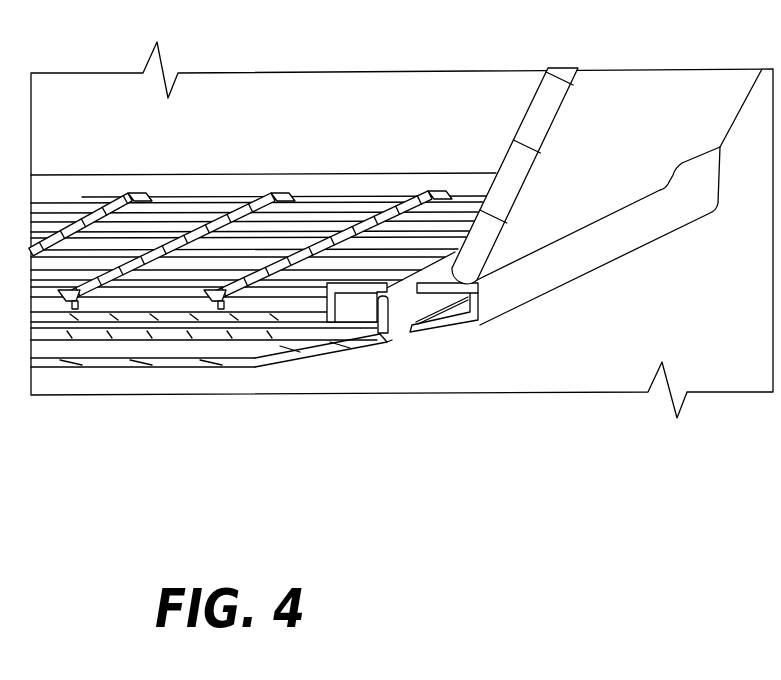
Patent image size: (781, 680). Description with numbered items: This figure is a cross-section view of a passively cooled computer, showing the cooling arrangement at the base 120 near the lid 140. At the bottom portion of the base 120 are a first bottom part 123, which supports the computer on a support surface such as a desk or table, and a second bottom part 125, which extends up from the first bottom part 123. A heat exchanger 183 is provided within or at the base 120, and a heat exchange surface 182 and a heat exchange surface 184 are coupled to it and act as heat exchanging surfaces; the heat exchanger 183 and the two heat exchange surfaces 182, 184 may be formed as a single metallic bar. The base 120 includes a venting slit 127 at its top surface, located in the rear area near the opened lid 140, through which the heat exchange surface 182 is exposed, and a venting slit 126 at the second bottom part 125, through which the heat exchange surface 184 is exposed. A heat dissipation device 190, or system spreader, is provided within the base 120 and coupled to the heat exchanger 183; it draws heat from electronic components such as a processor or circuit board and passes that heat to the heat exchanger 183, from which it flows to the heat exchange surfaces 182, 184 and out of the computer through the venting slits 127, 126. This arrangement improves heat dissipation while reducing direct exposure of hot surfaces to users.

The base 120 is at (88, 183).
The first bottom part 123 is at (67, 370).
The second bottom part 125 is at (310, 357).
The venting slit 126 is at (387, 355).
The venting slit 127 is at (397, 272).
The lid 140 is at (622, 95).
The heat exchange surface 182 is at (432, 283).
The heat exchanger 183 is at (407, 334).
The heat exchange surface 184 is at (432, 330).
The heat dissipation device 190 is at (203, 332).